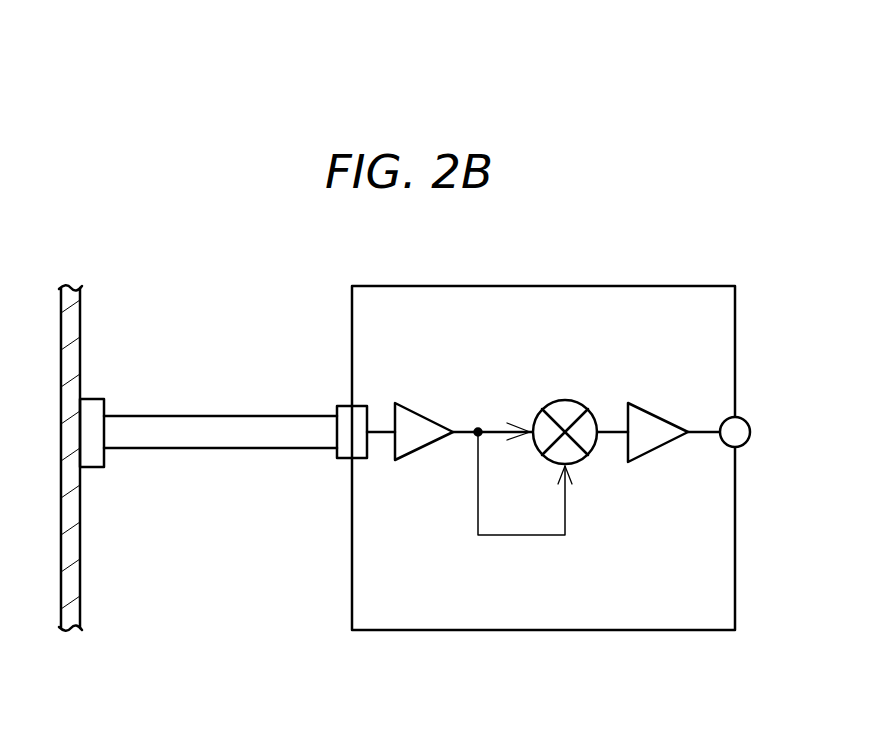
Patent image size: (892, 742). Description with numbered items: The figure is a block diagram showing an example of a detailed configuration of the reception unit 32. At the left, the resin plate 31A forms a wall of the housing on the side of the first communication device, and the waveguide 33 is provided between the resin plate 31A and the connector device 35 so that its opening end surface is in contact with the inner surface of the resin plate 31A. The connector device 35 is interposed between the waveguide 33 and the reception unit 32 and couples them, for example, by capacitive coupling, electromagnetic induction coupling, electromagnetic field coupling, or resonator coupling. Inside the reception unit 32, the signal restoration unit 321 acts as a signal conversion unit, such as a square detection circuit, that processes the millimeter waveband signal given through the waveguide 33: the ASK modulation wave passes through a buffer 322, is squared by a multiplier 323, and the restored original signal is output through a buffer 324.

The resin plate 31A is at (79, 339).
The waveguide 33 is at (213, 440).
The connector device 35 is at (341, 408).
The reception unit 32 is at (542, 300).
The signal restoration unit 321 is at (558, 471).
The buffer 322 is at (420, 445).
The multiplier 323 is at (562, 410).
The buffer 324 is at (653, 448).